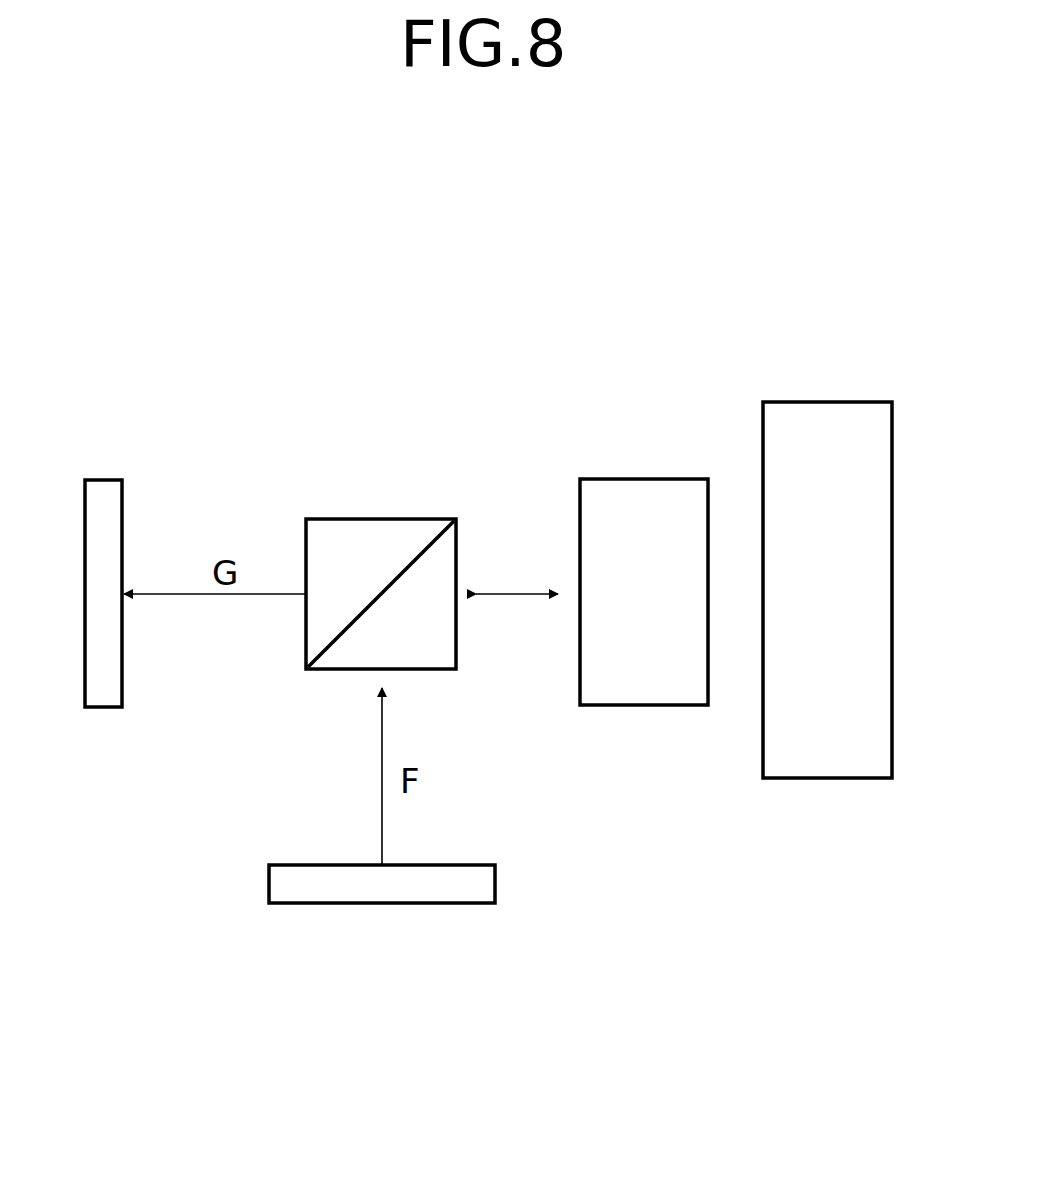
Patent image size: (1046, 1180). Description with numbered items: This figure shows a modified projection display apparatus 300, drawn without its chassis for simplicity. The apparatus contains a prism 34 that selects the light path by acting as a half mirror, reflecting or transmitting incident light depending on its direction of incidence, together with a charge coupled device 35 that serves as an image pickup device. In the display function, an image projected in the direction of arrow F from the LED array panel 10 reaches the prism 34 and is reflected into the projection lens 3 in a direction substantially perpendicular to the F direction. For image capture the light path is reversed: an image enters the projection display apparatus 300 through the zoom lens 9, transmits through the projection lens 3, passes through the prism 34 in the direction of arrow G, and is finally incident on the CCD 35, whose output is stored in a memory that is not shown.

The projection display apparatus 300 is at (400, 277).
The charge coupled device (CCD) 35 is at (100, 479).
The prism 34 is at (420, 518).
The projection lens 3 is at (640, 479).
The zoom lens 9 is at (826, 401).
The LED array panel 10 is at (420, 905).